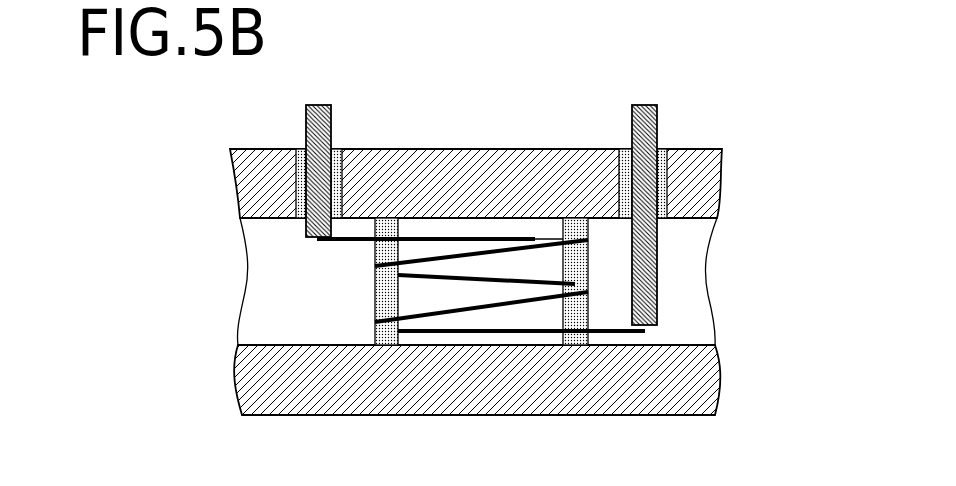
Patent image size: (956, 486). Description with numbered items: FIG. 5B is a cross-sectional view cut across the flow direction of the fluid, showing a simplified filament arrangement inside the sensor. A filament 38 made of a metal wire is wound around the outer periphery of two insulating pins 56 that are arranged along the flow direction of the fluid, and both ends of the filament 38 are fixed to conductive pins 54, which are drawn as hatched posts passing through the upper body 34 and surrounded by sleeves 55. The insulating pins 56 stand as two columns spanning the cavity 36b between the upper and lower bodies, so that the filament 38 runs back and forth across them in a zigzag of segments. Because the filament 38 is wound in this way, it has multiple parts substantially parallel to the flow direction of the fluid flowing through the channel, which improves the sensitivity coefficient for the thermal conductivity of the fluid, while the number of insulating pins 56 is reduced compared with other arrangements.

The upper substrate 34 is at (457, 172).
The recess 36b is at (490, 228).
The filament 38 is at (528, 300).
The conductive pins 54 is at (307, 225).
The insulating sleeve 55 is at (300, 160).
The insulating pins 56 is at (388, 296).